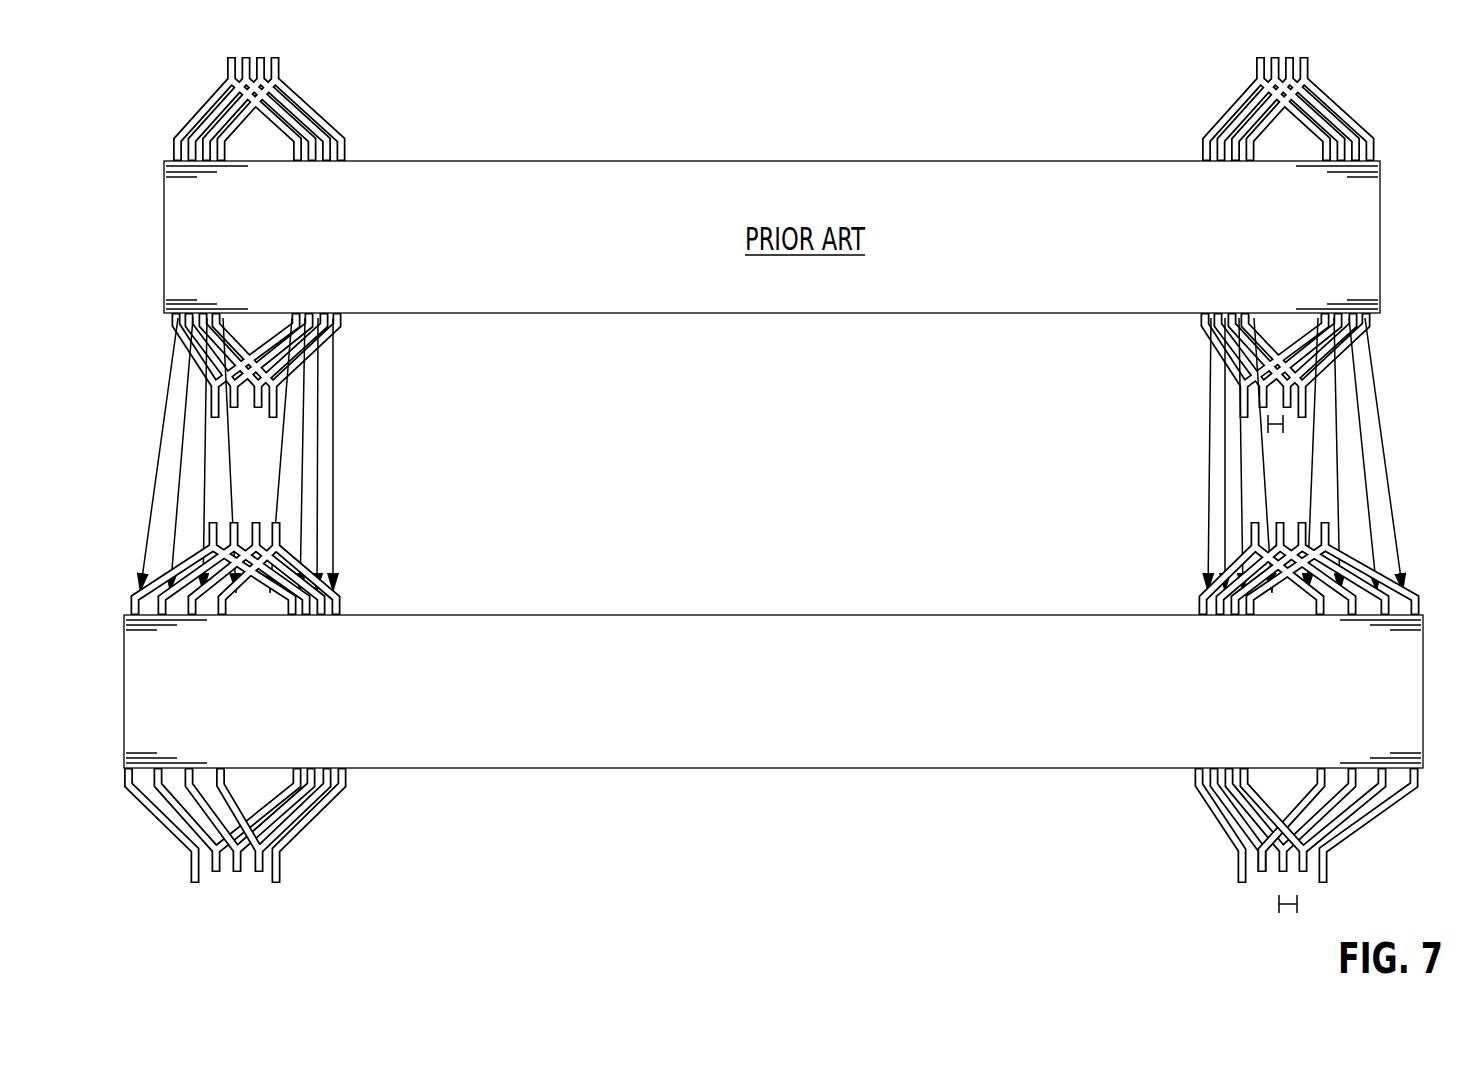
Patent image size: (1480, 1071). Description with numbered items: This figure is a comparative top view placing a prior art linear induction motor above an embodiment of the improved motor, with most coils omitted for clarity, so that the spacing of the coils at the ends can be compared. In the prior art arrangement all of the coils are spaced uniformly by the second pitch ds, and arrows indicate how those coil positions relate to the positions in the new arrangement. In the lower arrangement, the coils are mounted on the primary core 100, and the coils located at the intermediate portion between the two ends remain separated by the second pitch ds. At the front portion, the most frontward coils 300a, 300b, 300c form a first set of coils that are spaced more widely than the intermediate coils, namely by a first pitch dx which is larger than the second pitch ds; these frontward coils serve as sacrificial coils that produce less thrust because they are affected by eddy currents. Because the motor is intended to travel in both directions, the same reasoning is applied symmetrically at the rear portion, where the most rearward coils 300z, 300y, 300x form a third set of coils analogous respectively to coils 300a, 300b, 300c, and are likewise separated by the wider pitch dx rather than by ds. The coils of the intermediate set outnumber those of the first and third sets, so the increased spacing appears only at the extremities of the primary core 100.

The primary core 100 is at (772, 706).
The most frontward coil 300a is at (236, 873).
The frontward coil 300b is at (258, 873).
The frontward coil 300c is at (277, 884).
The rearward coil 300x is at (1313, 818).
The rearward coil 300y is at (1300, 875).
The most rearward coil 300z is at (1327, 865).
The second pitch ds is at (1268, 418).
The first pitch dx is at (1287, 908).